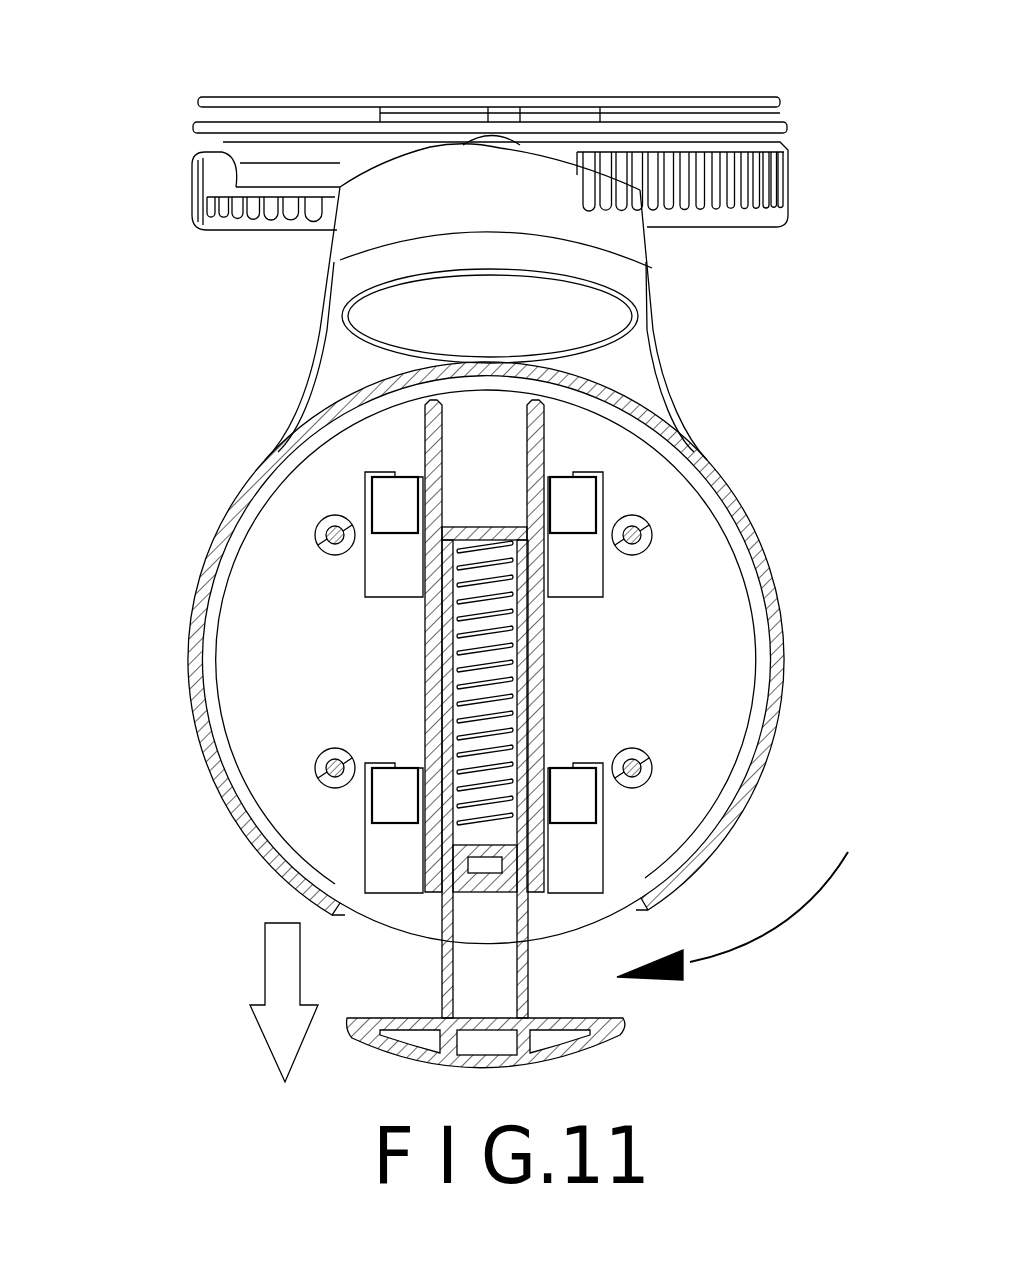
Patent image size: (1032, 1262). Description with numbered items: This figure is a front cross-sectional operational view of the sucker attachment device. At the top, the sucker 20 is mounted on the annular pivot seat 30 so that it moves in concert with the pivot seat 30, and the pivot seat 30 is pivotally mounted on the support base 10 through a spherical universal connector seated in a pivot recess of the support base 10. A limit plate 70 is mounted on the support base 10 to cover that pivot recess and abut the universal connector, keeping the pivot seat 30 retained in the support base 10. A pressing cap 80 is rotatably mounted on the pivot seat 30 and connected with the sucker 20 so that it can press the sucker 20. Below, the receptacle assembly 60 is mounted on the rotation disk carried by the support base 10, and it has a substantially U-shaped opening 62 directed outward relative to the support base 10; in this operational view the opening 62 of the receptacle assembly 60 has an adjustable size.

The support base 10 is at (637, 387).
The sucker 20 is at (539, 97).
The pivot seat 30 is at (214, 140).
The receptacle assembly 60 is at (198, 608).
The opening 62 is at (756, 875).
The limit plate 70 is at (623, 237).
The pressing cap 80 is at (252, 222).